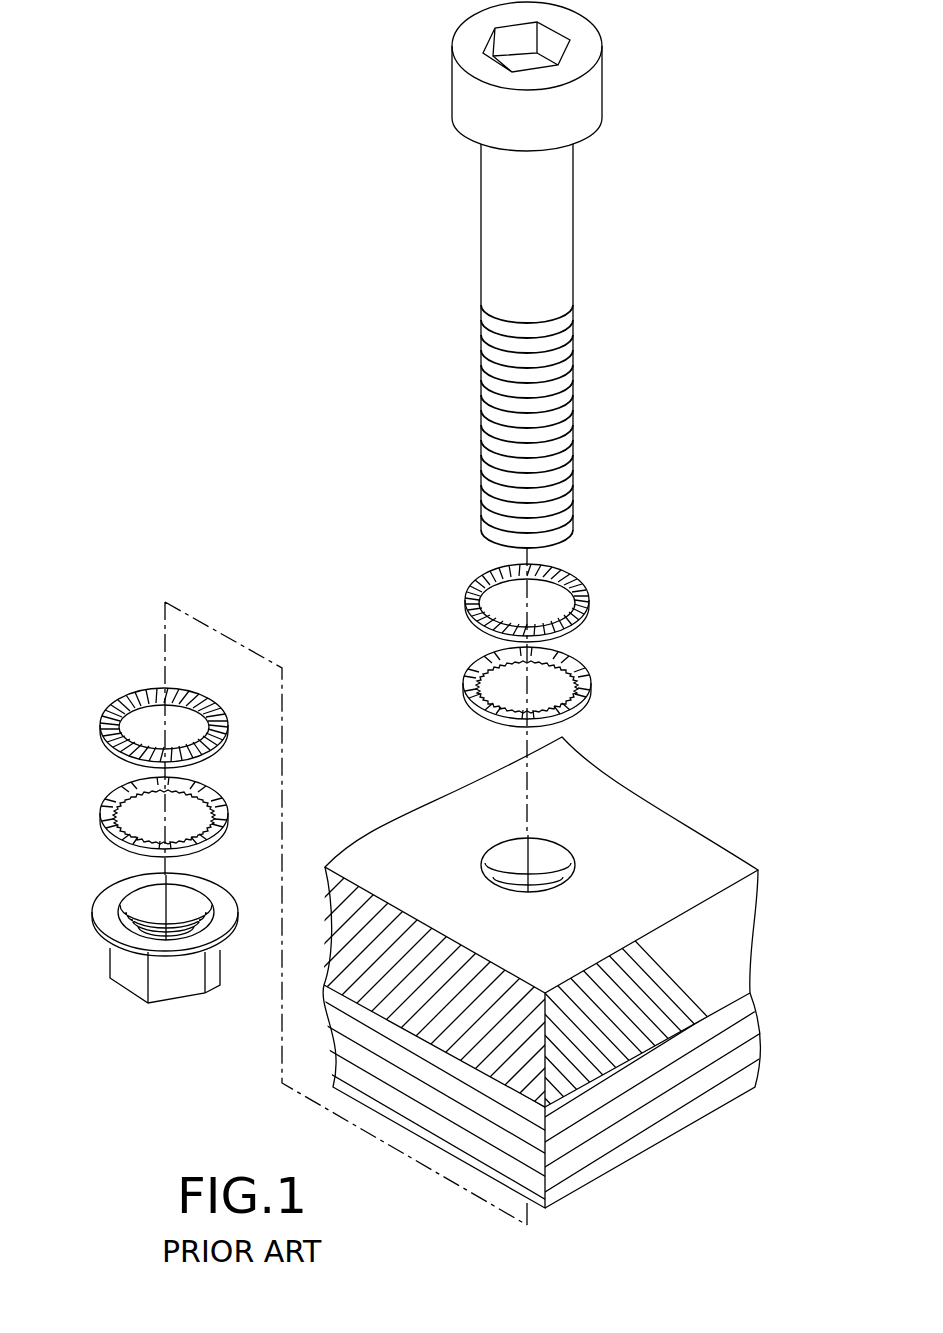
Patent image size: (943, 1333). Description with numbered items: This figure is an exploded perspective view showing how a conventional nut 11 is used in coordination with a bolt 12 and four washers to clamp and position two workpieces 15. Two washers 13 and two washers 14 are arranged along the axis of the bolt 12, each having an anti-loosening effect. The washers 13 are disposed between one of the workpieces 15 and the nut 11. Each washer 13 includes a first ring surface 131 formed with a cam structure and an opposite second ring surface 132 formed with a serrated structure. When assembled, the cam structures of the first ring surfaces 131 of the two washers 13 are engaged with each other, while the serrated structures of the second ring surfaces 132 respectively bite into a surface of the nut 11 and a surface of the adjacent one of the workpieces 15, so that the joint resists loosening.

The nut 11 is at (118, 967).
The bolt 12 is at (553, 266).
The washers 13 is at (127, 770).
The first ring surface 131 is at (107, 833).
The second ring surface 132 is at (130, 852).
The washers 14 is at (573, 663).
The workpieces 15 is at (718, 1052).